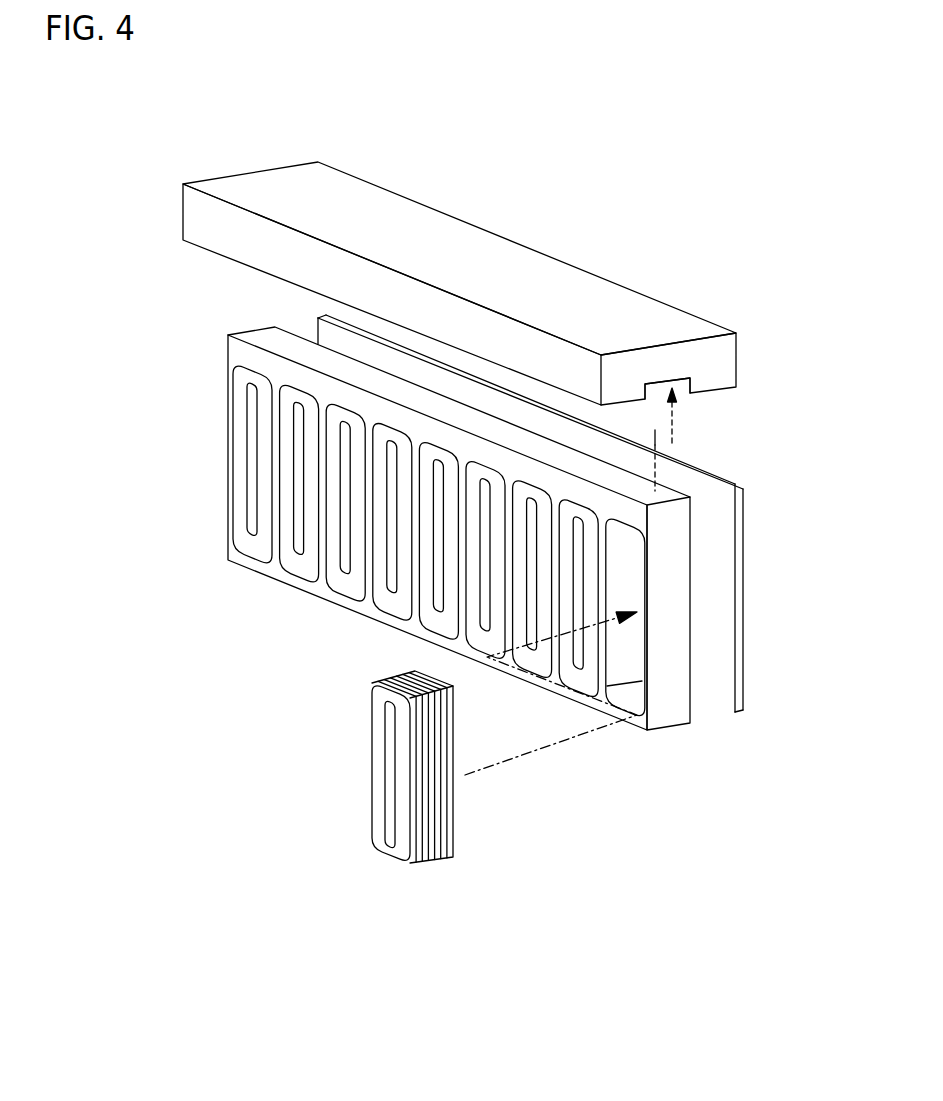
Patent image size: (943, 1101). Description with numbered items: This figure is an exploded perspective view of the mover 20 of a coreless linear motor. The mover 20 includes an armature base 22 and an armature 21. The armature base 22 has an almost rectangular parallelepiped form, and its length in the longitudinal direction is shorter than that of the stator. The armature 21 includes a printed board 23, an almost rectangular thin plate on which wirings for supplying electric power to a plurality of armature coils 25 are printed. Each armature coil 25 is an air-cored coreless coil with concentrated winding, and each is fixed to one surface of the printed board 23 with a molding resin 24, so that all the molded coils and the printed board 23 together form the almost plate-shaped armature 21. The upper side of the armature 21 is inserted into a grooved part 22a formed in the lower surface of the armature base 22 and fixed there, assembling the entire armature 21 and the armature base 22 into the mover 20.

The mover 20 is at (138, 213).
The armature 21 is at (770, 477).
The armature base 22 is at (536, 270).
The grooved part 22a is at (660, 395).
The printed board 23 is at (746, 590).
The molding resin 24 is at (662, 707).
The armature coil 25 is at (240, 515).